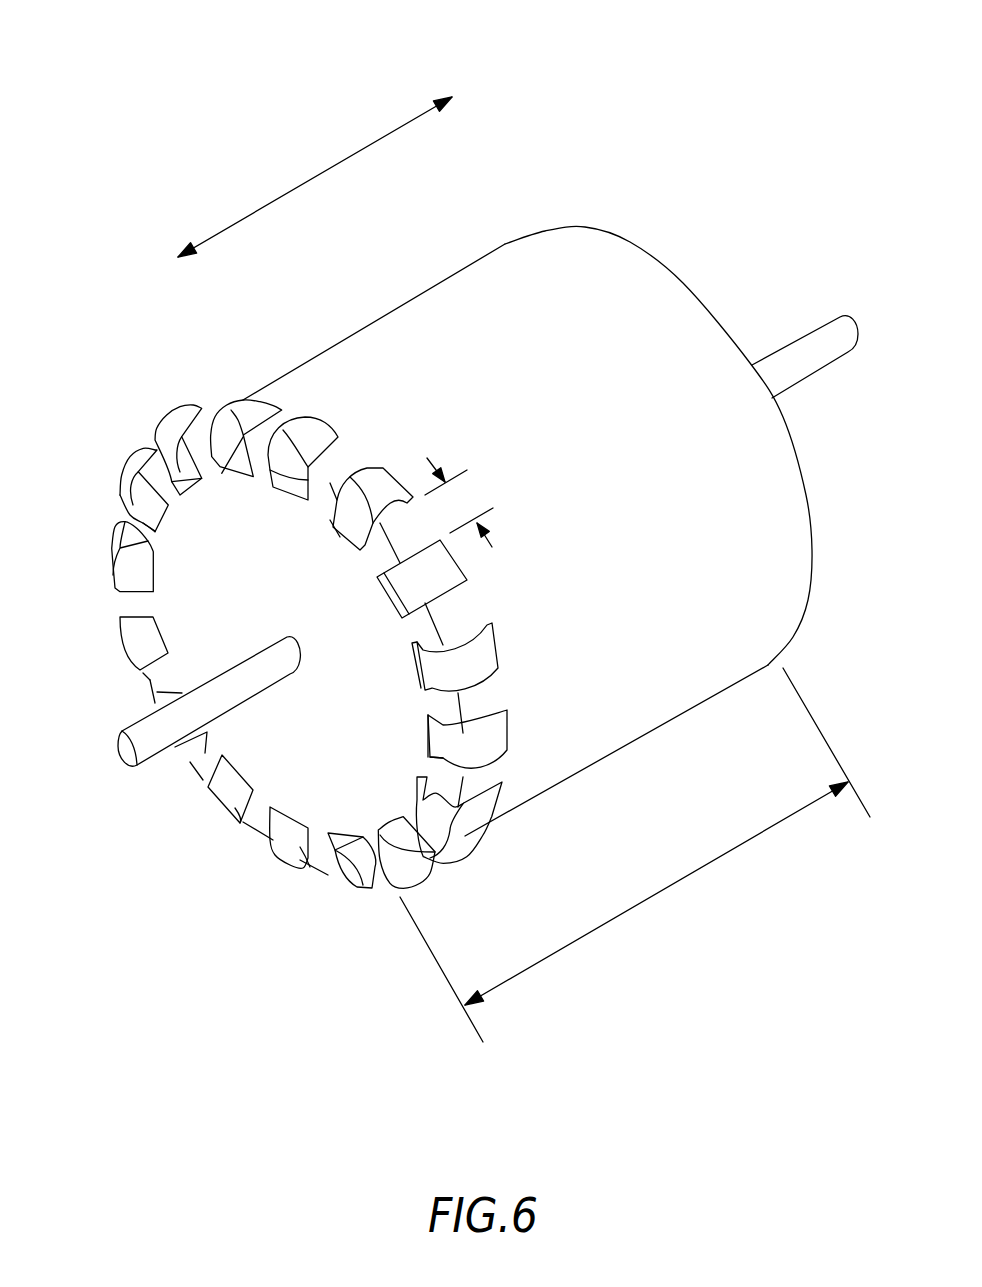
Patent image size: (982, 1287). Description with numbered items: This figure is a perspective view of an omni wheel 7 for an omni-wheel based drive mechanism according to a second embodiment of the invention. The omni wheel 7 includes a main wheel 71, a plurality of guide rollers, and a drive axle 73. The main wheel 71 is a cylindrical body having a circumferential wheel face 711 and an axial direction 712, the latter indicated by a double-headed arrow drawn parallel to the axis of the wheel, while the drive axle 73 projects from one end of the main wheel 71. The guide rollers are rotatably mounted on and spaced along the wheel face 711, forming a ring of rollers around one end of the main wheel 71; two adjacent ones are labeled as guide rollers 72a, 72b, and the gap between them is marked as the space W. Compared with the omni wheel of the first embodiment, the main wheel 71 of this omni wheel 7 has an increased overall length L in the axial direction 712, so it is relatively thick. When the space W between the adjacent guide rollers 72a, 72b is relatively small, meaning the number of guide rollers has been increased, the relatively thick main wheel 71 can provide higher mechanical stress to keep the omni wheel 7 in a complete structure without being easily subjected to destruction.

The omni wheel 7 is at (767, 105).
The circumferential wheel face 711 is at (420, 318).
The axial direction 712 is at (315, 177).
The main wheel 71 is at (197, 602).
The guide roller 72a is at (375, 490).
The guide roller 72b is at (445, 570).
The drive axle 73 is at (795, 360).
The space between two adjacent guide rollers W is at (462, 497).
The overall length L is at (635, 905).